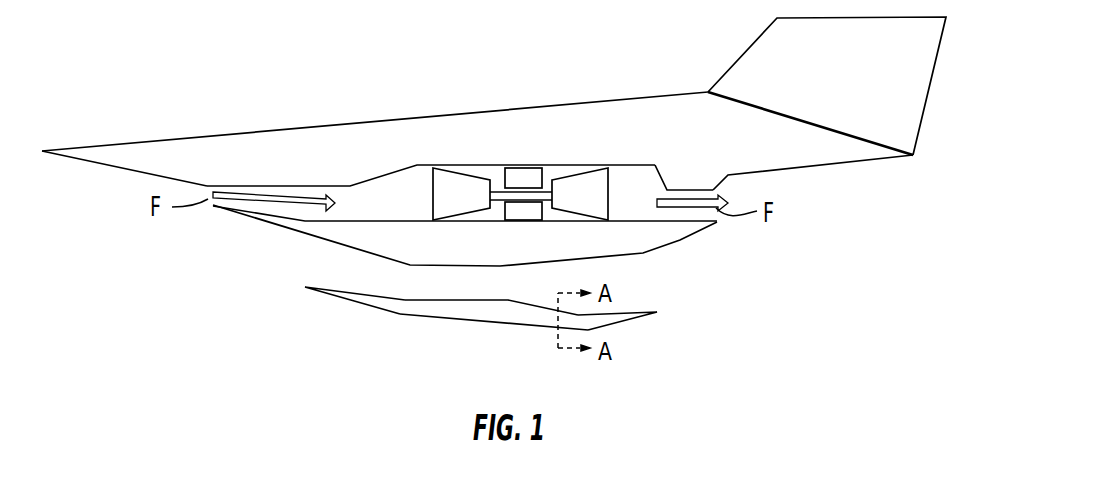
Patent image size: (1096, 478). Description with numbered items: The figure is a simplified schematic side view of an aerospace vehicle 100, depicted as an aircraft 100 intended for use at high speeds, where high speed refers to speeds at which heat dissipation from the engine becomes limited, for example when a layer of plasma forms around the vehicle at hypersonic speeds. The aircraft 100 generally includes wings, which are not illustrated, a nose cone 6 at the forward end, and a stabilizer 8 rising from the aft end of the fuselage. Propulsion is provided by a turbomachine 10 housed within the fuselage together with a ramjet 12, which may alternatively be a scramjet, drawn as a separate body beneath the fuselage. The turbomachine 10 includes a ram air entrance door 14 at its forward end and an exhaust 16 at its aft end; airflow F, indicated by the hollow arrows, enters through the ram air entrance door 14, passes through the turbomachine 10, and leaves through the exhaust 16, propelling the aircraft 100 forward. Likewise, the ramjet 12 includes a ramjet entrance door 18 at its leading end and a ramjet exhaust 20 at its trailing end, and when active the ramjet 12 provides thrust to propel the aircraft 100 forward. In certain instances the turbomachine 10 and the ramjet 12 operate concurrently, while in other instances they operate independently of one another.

The aerospace vehicle 100 is at (203, 70).
The nose cone 6 is at (46, 153).
The stabilizer 8 is at (758, 37).
The turbomachine 10 is at (520, 140).
The ramjet 12 is at (463, 330).
The ram air entrance door 14 is at (206, 212).
The exhaust 16 is at (748, 230).
The ramjet entrance door 18 is at (299, 296).
The ramjet exhaust 20 is at (636, 330).